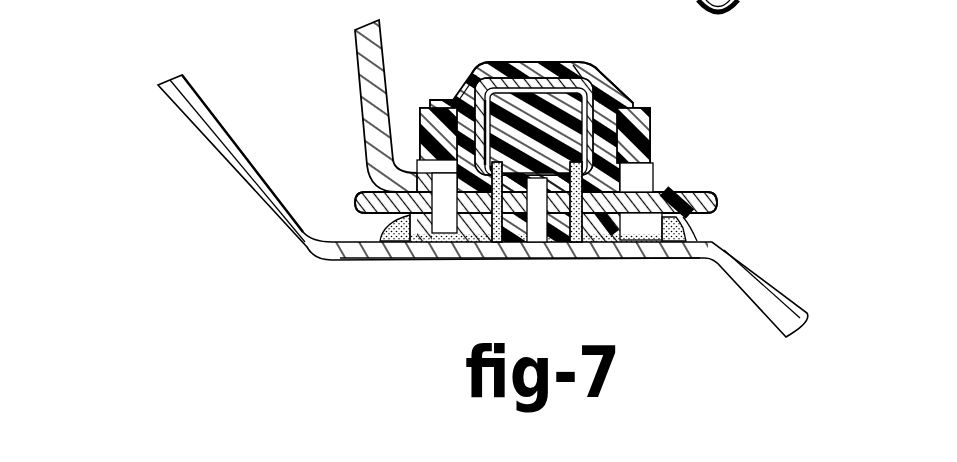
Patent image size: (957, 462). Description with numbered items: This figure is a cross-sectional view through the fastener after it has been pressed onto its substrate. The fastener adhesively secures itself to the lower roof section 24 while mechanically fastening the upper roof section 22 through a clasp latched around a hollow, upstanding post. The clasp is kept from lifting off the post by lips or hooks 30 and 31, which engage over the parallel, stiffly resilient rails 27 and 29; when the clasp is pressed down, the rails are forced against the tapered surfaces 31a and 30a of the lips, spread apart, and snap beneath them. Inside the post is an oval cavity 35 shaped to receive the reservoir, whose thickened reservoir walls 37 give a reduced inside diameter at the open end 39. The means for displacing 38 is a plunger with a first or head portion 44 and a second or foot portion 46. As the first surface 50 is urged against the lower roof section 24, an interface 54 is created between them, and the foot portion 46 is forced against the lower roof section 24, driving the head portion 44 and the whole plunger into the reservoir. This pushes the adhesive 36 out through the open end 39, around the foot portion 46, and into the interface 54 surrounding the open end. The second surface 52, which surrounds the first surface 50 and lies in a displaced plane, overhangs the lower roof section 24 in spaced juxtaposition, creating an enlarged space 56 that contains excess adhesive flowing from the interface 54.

The upper roof section 22 is at (357, 42).
The lower roof section 24 is at (305, 240).
The rail 27 is at (645, 133).
The rail 29 is at (418, 112).
The lip or hook 30 is at (607, 63).
The tapered surface 30a is at (580, 107).
The lip or hook 31 is at (470, 82).
The tapered surface 31a is at (445, 100).
The cavity 35 is at (485, 90).
The adhesive 36 is at (380, 262).
The thickened reservoir walls 37 is at (495, 250).
The means for displacing 38 is at (585, 125).
The open end 39 is at (548, 250).
The first or head portion 44 is at (530, 95).
The second or foot portion 46 is at (587, 195).
The first surface 50 is at (417, 250).
The second surface 52 is at (360, 220).
The interface 54 is at (463, 250).
The enlarged space 56 is at (362, 228).